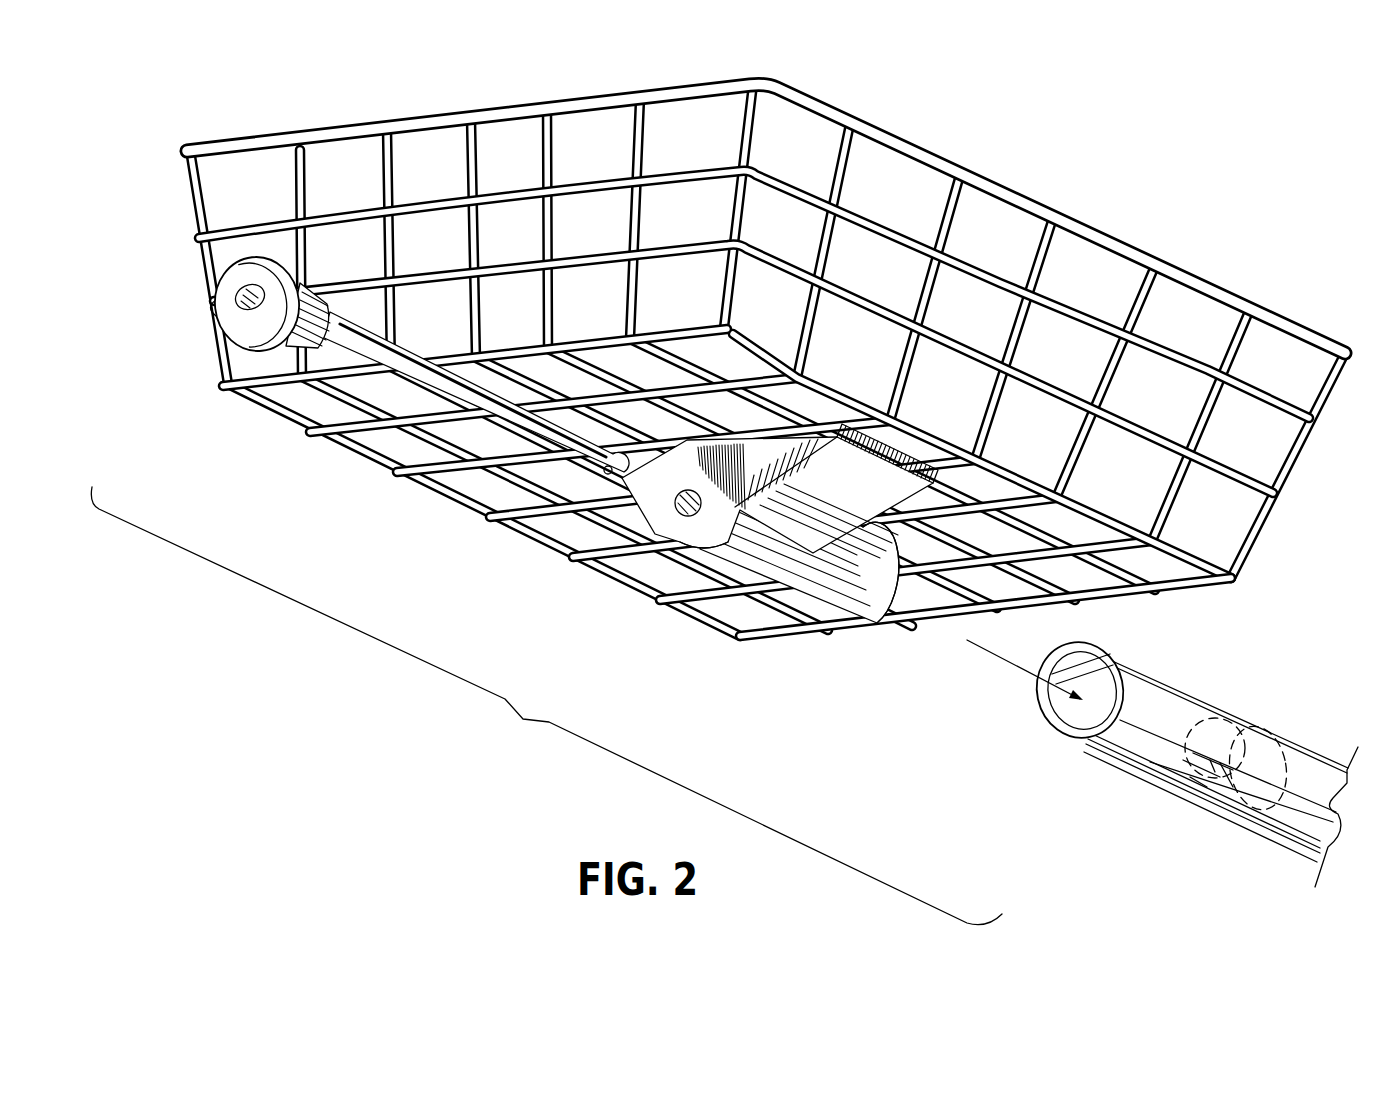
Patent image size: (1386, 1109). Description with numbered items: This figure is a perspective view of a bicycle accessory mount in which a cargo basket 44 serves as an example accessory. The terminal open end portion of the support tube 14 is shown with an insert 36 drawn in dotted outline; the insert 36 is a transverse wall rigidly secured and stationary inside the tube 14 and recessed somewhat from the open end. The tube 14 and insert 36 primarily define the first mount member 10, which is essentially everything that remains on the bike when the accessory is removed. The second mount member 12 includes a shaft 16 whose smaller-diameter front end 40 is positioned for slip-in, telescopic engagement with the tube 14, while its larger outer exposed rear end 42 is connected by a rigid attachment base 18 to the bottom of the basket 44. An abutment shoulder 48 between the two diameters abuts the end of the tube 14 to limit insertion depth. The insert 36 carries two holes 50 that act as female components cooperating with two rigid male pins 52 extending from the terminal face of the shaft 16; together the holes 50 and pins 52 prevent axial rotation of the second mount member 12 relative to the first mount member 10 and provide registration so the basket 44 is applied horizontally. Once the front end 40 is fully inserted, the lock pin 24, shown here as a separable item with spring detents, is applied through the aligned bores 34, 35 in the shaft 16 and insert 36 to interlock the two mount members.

The first mount member 10 is at (773, 465).
The second mount member 12 is at (766, 381).
The support tube 14 is at (1163, 756).
The shaft 16 is at (818, 605).
The attachment base 18 is at (721, 566).
The lock pin 24 is at (347, 337).
The bore 34 is at (680, 518).
The bore 35 is at (1211, 748).
The insert 36 is at (1257, 793).
The front end 40 is at (877, 627).
The rear end 42 is at (700, 550).
The cargo basket 44 is at (900, 140).
The abutment shoulder 48 is at (817, 646).
The holes 50 is at (1225, 787).
The pins 52 is at (950, 616).